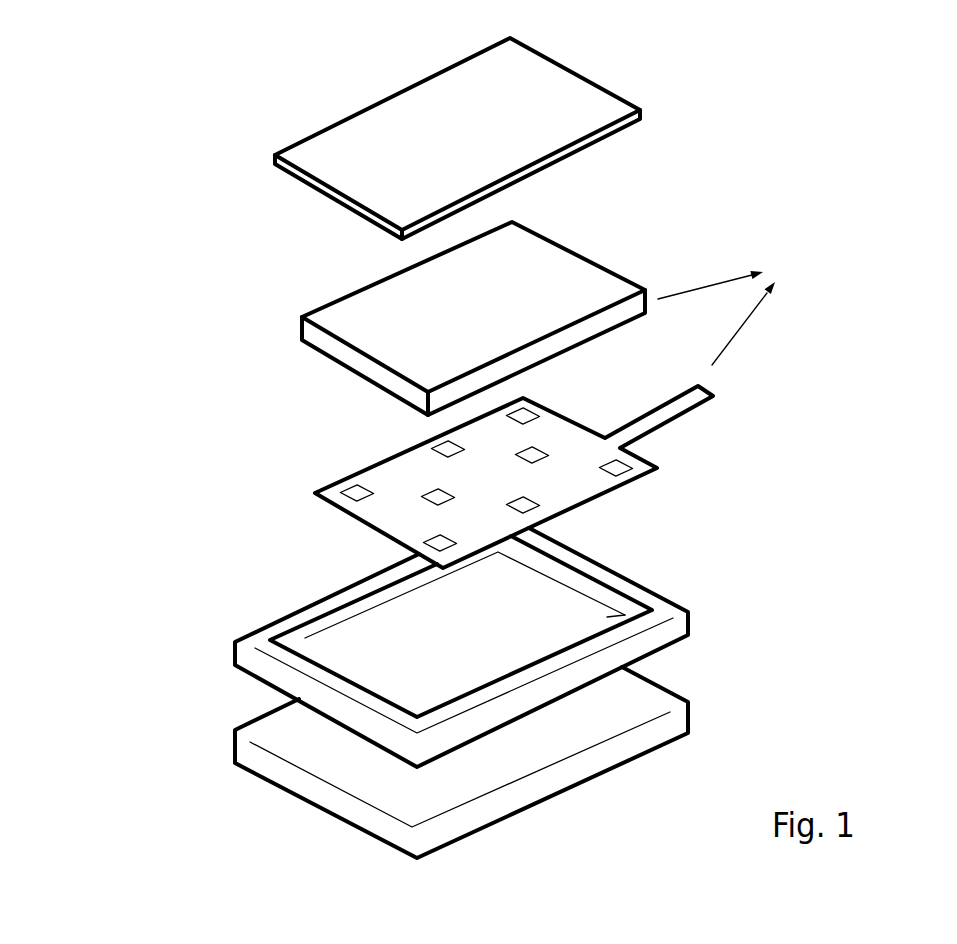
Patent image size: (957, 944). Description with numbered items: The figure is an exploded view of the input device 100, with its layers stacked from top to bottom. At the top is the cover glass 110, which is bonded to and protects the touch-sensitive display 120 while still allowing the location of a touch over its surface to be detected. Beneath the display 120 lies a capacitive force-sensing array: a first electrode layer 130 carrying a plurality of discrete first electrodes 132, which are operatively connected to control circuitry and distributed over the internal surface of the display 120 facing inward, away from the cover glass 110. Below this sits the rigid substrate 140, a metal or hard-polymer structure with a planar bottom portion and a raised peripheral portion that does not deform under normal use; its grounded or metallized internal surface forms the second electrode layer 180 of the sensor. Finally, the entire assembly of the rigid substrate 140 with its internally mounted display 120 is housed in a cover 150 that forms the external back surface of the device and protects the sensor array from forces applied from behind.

The input device 100 is at (246, 326).
The cover glass 110 is at (575, 157).
The touch-sensitive display 120 is at (535, 265).
The first electrode layer 130 is at (603, 416).
The first electrodes 132 is at (525, 479).
The rigid substrate 140 is at (622, 592).
The second electrode layer 180 is at (680, 642).
The cover 150 is at (667, 700).